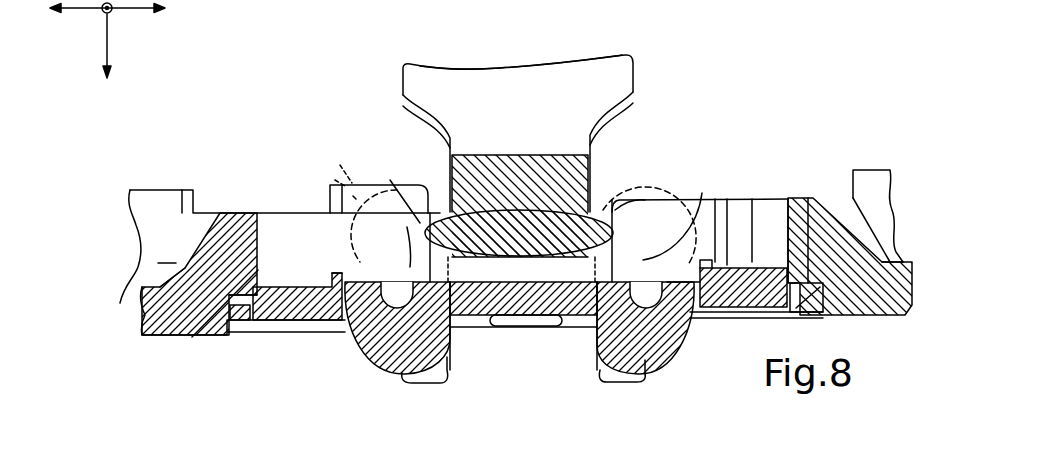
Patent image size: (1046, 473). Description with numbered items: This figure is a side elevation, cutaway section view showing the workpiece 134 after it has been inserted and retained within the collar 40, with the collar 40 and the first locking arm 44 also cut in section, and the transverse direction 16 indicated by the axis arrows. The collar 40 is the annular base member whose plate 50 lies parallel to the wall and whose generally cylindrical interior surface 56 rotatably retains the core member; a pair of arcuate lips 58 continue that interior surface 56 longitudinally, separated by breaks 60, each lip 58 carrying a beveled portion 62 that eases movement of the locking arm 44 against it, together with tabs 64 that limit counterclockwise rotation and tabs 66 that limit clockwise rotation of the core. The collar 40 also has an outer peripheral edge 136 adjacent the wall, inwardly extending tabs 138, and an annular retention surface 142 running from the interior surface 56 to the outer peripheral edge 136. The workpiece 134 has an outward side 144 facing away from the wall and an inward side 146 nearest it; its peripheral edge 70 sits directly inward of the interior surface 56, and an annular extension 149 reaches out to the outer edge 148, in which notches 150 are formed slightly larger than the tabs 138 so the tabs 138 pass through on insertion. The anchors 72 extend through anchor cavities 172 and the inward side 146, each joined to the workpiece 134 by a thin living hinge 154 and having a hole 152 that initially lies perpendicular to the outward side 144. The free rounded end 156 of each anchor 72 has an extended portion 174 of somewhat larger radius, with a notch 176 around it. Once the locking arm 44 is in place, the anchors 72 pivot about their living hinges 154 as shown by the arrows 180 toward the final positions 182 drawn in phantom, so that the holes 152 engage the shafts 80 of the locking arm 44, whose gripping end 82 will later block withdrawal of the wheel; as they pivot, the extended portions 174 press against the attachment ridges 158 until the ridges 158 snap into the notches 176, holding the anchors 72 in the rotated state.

The transverse direction 16 is at (128, 14).
The collar 40 is at (150, 165).
The first locking arm 44 is at (632, 88).
The plate 50 is at (903, 218).
The interior surface 56 is at (143, 292).
The arcuate lips 58 is at (263, 228).
The breaks 60 is at (440, 200).
The beveled portion 62 is at (608, 138).
The tabs 64 is at (353, 192).
The tabs 66 is at (143, 190).
The peripheral edge 70 is at (790, 318).
The anchors 72 is at (436, 399).
The shafts 80 is at (368, 192).
The gripping end 82 is at (598, 50).
The workpiece 134 is at (273, 356).
The outer peripheral edge 136 is at (235, 342).
The tabs 138 is at (515, 328).
The annular retention surface 142 is at (248, 322).
The outward side 144 is at (752, 199).
The inward side 146 is at (700, 312).
The outer edge 148 is at (193, 336).
The annular extension 149 is at (813, 198).
The notches 150 is at (822, 320).
The holes 152 is at (428, 246).
The living hinges 154 is at (457, 300).
The rounded end 156 is at (340, 165).
The attachment ridges 158 is at (727, 199).
The anchor cavities 172 is at (336, 333).
The extended portion 174 is at (402, 383).
The notch 176 is at (450, 372).
The arrows 180 is at (715, 199).
The final positions 182 is at (335, 180).